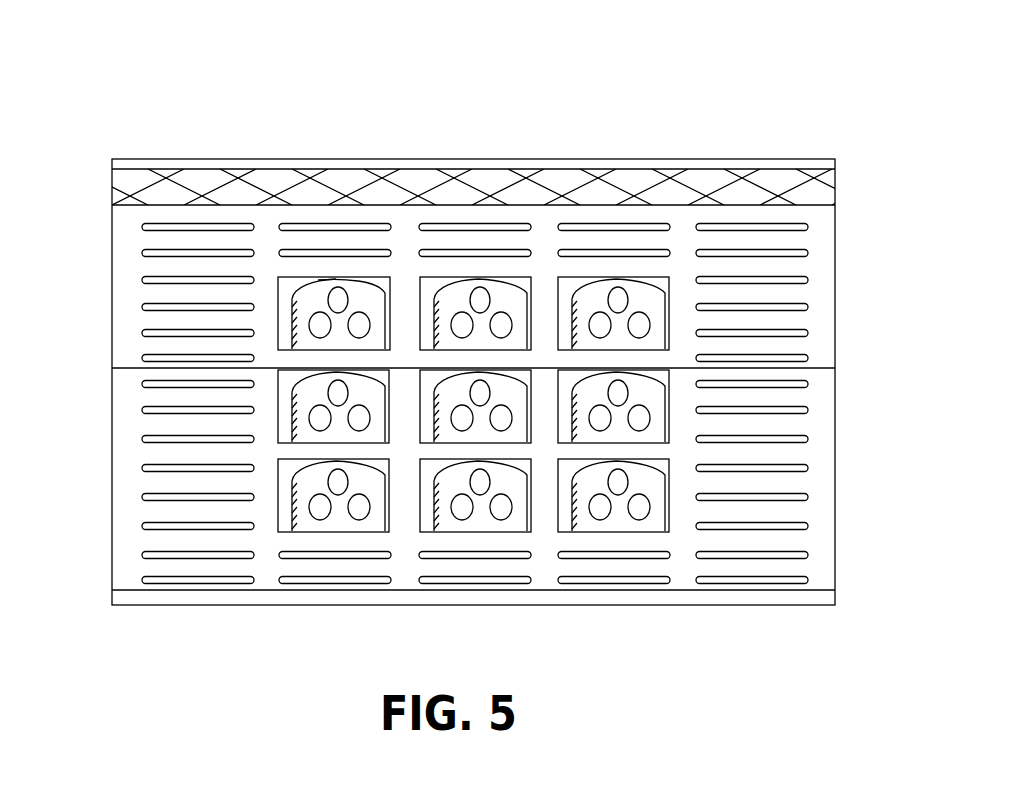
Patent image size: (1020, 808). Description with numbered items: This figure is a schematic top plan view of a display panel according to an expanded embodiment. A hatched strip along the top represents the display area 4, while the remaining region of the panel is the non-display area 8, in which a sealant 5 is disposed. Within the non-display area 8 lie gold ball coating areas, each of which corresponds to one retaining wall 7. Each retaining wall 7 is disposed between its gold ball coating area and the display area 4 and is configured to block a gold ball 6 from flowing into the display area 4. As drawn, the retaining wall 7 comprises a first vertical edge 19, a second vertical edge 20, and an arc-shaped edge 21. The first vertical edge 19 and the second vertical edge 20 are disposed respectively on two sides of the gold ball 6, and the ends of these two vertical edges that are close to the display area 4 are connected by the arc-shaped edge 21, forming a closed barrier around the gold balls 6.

The display area 4 is at (88, 136).
The sealant 5 is at (848, 366).
The gold ball 6 is at (482, 280).
The retaining wall 7 is at (369, 178).
The non-display area 8 is at (100, 207).
The first vertical edge 19 is at (320, 223).
The second vertical edge 20 is at (417, 223).
The arc-shaped edge 21 is at (361, 189).